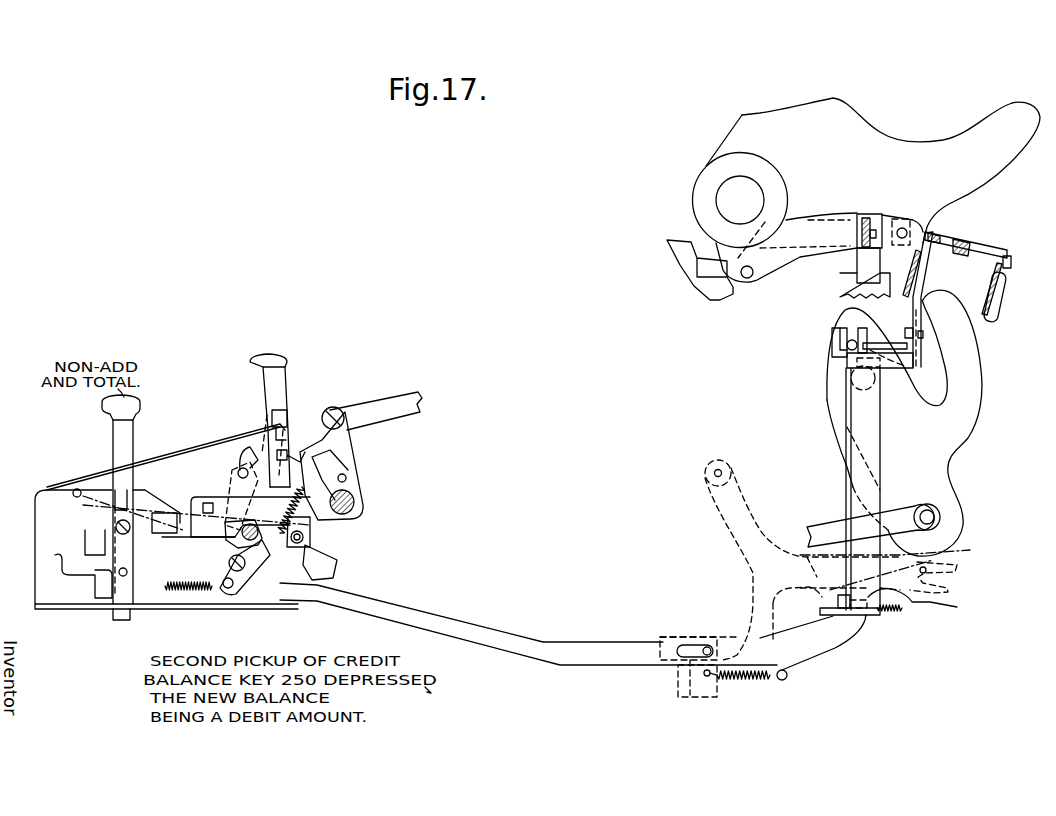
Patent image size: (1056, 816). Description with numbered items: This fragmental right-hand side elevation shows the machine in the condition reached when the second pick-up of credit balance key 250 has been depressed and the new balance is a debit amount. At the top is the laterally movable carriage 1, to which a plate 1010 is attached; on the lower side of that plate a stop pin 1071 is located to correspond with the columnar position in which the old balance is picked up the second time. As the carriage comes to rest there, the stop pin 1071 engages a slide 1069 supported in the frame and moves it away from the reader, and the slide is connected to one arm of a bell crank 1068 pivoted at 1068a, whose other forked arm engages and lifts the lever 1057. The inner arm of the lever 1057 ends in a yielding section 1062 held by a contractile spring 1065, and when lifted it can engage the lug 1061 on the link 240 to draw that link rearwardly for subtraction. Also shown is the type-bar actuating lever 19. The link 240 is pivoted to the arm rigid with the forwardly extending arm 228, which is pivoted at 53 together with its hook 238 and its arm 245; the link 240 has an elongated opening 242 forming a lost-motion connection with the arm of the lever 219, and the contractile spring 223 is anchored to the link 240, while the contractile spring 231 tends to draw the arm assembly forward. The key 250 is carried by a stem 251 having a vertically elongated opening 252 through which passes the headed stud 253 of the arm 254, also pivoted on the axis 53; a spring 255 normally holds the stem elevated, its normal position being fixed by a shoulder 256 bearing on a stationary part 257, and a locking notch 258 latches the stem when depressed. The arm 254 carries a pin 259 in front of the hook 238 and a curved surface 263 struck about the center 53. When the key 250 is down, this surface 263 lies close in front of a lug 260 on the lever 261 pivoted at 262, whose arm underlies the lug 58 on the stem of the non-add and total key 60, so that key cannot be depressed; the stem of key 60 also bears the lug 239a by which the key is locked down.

The carriage 1 is at (760, 127).
The lever 19 is at (973, 410).
The pivot axis 53 is at (226, 560).
The projection 58 is at (172, 503).
The grand total key 60 is at (140, 415).
The lever 219 is at (812, 541).
The contractile spring 223 is at (762, 682).
The forwardly extending arm 228 is at (100, 490).
The contractile spring 231 is at (182, 590).
The hook 238 is at (238, 462).
The lug 239a is at (60, 560).
The link 240 is at (563, 640).
The elongated opening 242 is at (692, 696).
The arm 245 is at (284, 562).
The second pick-up of credit balance key 250 is at (283, 357).
The key stem 251 is at (284, 392).
The vertically elongated opening 252 is at (322, 538).
The headed stud 253 is at (337, 556).
The arm 254 is at (345, 468).
The spring 255 is at (318, 523).
The shoulder 256 is at (256, 432).
The stationary part 257 is at (289, 422).
The locking notch 258 is at (288, 410).
The pin 259 is at (228, 486).
The lug 260 is at (320, 449).
The lever 261 is at (357, 500).
The pivot axis 262 is at (356, 509).
The curved surface 263 is at (303, 447).
The plate 1010 is at (958, 246).
The lever 1057 is at (846, 466).
The lug 1061 is at (908, 566).
The yielding section 1062 is at (822, 584).
The contractile spring 1065 is at (900, 601).
The bell crank 1068 is at (913, 312).
The pivot 1068a is at (923, 334).
The slide 1069 is at (922, 262).
The stop pin 1071 is at (921, 236).